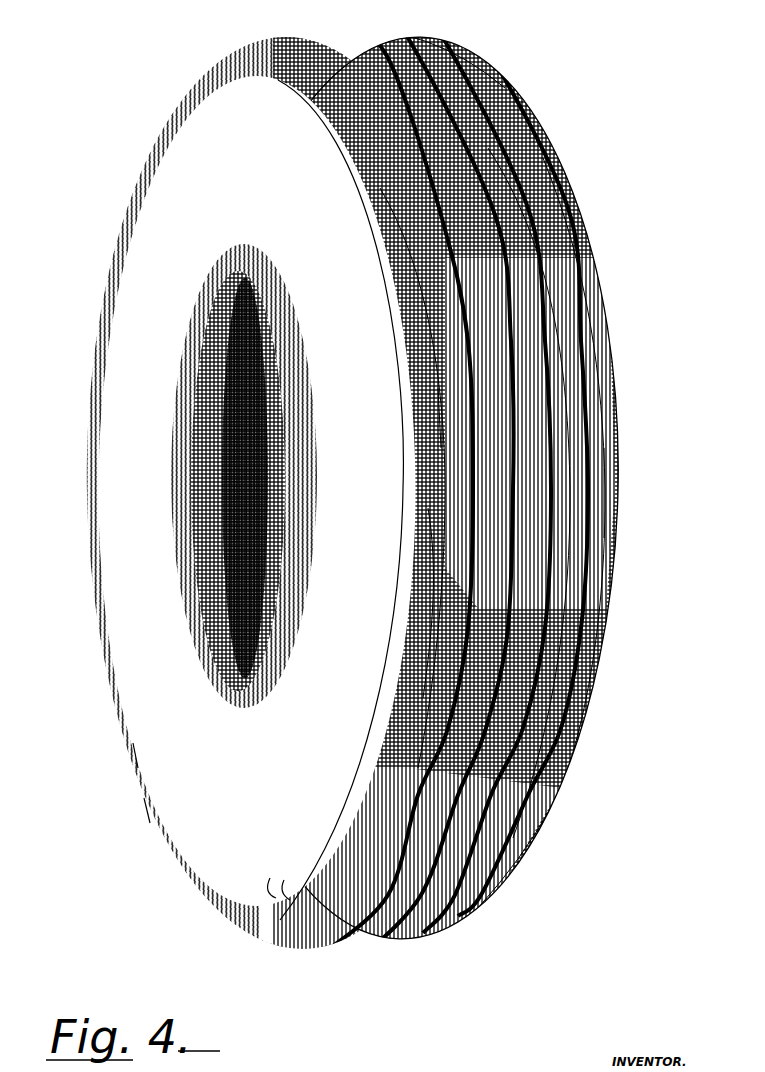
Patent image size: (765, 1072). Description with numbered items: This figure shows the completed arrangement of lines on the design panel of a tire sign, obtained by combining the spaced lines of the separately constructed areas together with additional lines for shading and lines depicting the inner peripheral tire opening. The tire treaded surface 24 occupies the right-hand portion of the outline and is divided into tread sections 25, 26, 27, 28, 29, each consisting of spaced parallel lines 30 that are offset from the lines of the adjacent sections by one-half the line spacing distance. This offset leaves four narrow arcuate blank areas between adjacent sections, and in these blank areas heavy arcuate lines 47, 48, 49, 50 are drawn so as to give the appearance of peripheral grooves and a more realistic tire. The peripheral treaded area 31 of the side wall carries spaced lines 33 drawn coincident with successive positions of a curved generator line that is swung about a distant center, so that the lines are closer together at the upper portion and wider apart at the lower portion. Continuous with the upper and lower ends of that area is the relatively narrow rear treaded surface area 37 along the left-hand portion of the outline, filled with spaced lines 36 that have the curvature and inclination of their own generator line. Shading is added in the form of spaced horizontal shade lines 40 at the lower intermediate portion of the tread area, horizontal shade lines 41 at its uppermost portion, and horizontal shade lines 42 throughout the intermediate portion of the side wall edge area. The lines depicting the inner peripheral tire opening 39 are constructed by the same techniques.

The tire treaded surface area 24 is at (432, 540).
The tread section 25 is at (437, 500).
The tread section 26 is at (437, 565).
The tread section 27 is at (528, 579).
The tread section 28 is at (563, 391).
The tread section 29 is at (598, 438).
The spaced parallel lines 30 is at (598, 495).
The peripheral treaded area of the side wall 31 is at (327, 823).
The spaced lines 33 is at (273, 876).
The spaced lines 36 is at (125, 745).
The rear treaded surface area of the side wall 37 is at (134, 800).
The lines depicting the inner peripheral tire opening 39 is at (160, 487).
The horizontal shade lines 40 is at (553, 791).
The horizontal shade lines 41 is at (527, 116).
The horizontal shade lines 42 is at (394, 615).
The heavy arcuate line 47 is at (432, 428).
The heavy arcuate line 48 is at (470, 326).
The heavy arcuate line 49 is at (530, 287).
The heavy arcuate line 50 is at (578, 352).